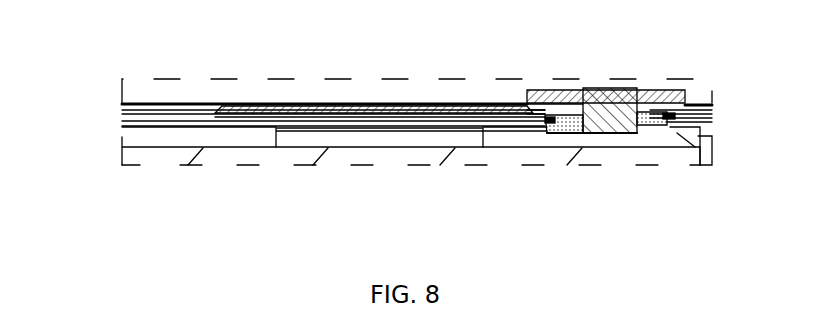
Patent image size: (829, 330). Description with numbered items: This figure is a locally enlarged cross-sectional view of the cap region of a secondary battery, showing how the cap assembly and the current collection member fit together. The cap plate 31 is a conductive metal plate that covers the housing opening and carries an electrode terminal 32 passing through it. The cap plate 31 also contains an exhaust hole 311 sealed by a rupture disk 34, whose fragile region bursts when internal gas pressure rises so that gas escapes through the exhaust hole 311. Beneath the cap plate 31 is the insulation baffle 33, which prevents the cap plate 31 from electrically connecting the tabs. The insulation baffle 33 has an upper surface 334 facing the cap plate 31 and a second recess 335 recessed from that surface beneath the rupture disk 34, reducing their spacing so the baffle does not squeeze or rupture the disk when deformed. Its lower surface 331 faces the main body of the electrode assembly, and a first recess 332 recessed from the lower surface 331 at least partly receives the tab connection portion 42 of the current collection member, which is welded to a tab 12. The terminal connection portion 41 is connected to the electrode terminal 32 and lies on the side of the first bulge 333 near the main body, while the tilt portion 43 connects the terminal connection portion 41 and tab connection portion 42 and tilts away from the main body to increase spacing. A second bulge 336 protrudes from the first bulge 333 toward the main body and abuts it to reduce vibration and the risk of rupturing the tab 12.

The tab 12 is at (445, 150).
The cap plate 31 is at (297, 106).
The exhaust hole 311 is at (168, 104).
The electrode terminal 32 is at (615, 88).
The insulation baffle 33 is at (301, 104).
The lower surface 331 is at (245, 128).
The first recess 332 is at (285, 132).
The first bulge 333 is at (545, 130).
The upper surface 334 is at (383, 104).
The second recess 335 is at (230, 119).
The second bulge 336 is at (705, 148).
The rupture disk 34 is at (122, 114).
The terminal connection portion 41 is at (632, 133).
The tab connection portion 42 is at (487, 130).
The tilt portion 43 is at (527, 128).